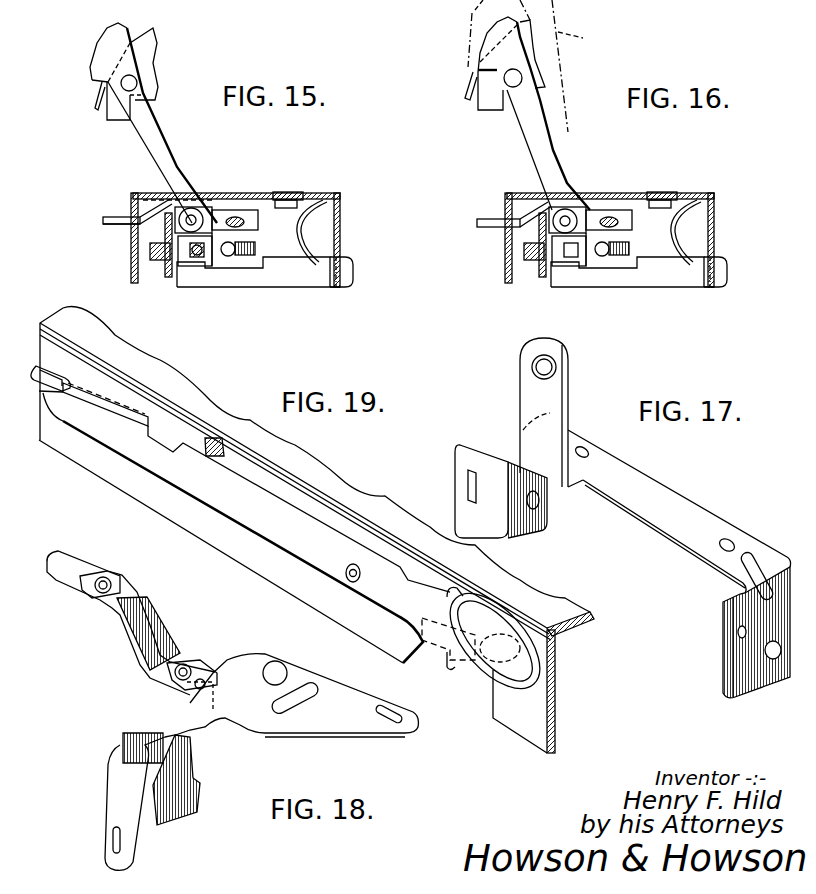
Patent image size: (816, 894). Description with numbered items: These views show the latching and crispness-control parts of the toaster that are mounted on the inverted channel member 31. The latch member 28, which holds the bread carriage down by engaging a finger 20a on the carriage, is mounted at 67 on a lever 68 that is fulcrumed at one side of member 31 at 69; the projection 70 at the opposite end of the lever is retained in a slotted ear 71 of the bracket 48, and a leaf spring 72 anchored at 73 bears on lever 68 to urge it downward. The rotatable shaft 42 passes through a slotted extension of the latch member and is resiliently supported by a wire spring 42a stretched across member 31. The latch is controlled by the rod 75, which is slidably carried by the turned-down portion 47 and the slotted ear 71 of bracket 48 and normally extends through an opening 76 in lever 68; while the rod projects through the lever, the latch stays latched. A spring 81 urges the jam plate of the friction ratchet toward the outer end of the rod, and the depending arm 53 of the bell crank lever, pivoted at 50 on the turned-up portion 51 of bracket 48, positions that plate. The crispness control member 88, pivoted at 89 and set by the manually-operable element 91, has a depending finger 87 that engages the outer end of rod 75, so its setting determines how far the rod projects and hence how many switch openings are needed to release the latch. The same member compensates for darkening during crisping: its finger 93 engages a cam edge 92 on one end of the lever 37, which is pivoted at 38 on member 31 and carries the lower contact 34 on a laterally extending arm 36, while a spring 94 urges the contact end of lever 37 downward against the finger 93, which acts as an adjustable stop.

In FIG. 15, the latch member 28 is at (100, 49).
In FIG. 16, the latch member 28 is at (513, 55).
In FIG. 15, the finger 20a is at (95, 99).
In FIG. 16, the finger 20a is at (472, 73).
In FIG. 15, the depending arm 53 is at (197, 15).
In FIG. 15, the inverted channel member 31 is at (340, 205).
In FIG. 16, the inverted channel member 31 is at (714, 215).
In FIG. 19, the inverted channel member 31 is at (327, 473).
In FIG. 15, the lever 37 is at (128, 240).
In FIG. 16, the lever 37 is at (502, 247).
In FIG. 19, the lever 37 is at (300, 543).
In FIG. 15, the finger 93 is at (112, 213).
In FIG. 16, the finger 93 is at (488, 217).
In FIG. 19, the finger 93 is at (42, 362).
In FIG. 18, the finger 93 is at (105, 821).
In FIG. 15, the mounting point 67 is at (192, 210).
In FIG. 16, the mounting point 67 is at (567, 211).
In FIG. 15, the shaft 42 is at (237, 218).
In FIG. 16, the shaft 42 is at (610, 220).
In FIG. 19, the wire spring 42a is at (208, 437).
In FIG. 15, the pivot 89 is at (288, 192).
In FIG. 16, the pivot 89 is at (662, 194).
In FIG. 18, the pivot 89 is at (262, 663).
In FIG. 15, the anchor point 73 is at (327, 198).
In FIG. 16, the anchor point 73 is at (701, 198).
In FIG. 15, the leaf spring 72 is at (303, 230).
In FIG. 16, the leaf spring 72 is at (675, 230).
In FIG. 15, the spring 81 is at (258, 249).
In FIG. 16, the spring 81 is at (631, 248).
In FIG. 15, the lever 68 is at (295, 279).
In FIG. 16, the lever 68 is at (680, 278).
In FIG. 15, the fulcrum 69 is at (354, 270).
In FIG. 16, the fulcrum 69 is at (728, 268).
In FIG. 15, the projection 70 is at (157, 262).
In FIG. 16, the projection 70 is at (532, 256).
In FIG. 15, the slotted ear 71 is at (168, 279).
In FIG. 16, the slotted ear 71 is at (544, 275).
In FIG. 17, the slotted ear 71 is at (513, 530).
In FIG. 15, the rod 75 is at (200, 268).
In FIG. 15, the opening 76 is at (192, 268).
In FIG. 16, the opening 76 is at (566, 268).
In FIG. 15, the depending finger 87 is at (213, 265).
In FIG. 16, the depending finger 87 is at (578, 268).
In FIG. 18, the depending finger 87 is at (197, 778).
In FIG. 19, the cam edge 92 is at (83, 408).
In FIG. 19, the pivot 38 is at (347, 580).
In FIG. 19, the lower contact 34 is at (507, 623).
In FIG. 19, the laterally extending arm 36 is at (487, 677).
In FIG. 19, the spring 94 is at (545, 680).
In FIG. 17, the pivot 50 is at (535, 362).
In FIG. 17, the turned-up portion 51 is at (528, 392).
In FIG. 17, the bracket 48 is at (652, 490).
In FIG. 17, the turned-down portion 47 is at (737, 648).
In FIG. 18, the manually-operable element 91 is at (72, 563).
In FIG. 18, the crispness control member 88 is at (162, 697).